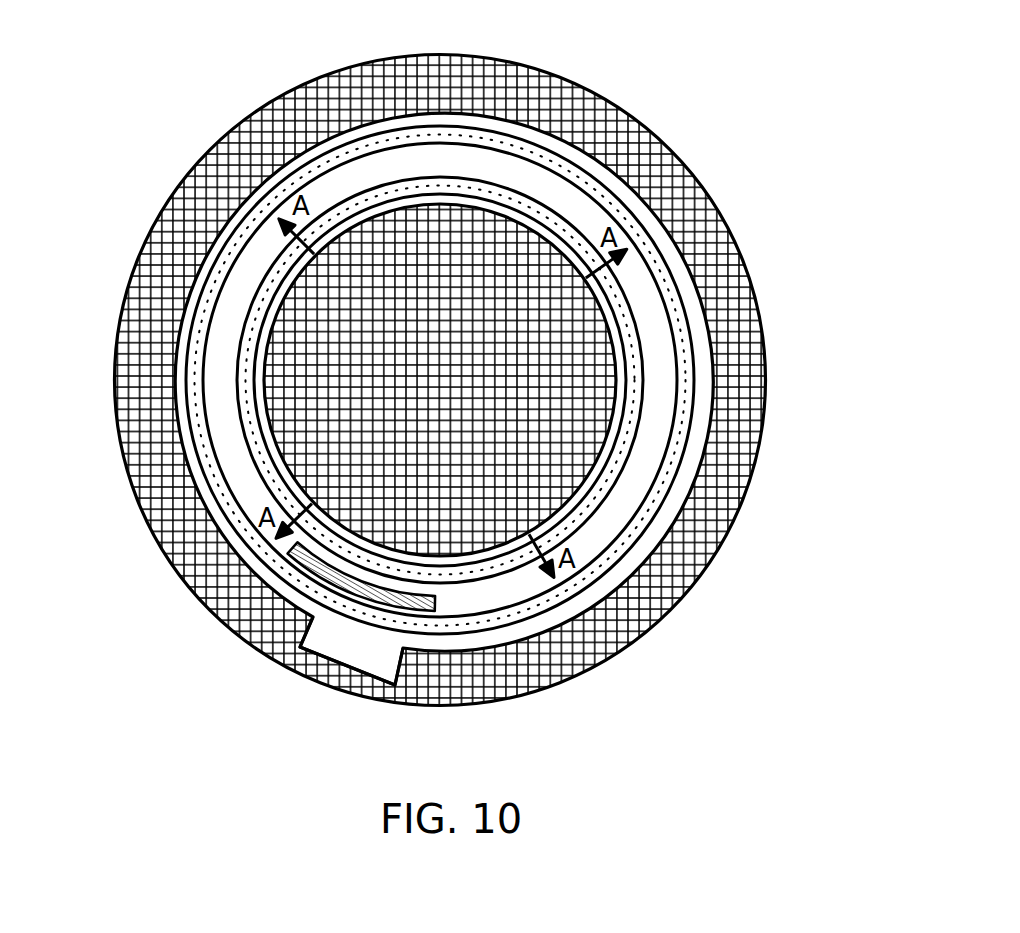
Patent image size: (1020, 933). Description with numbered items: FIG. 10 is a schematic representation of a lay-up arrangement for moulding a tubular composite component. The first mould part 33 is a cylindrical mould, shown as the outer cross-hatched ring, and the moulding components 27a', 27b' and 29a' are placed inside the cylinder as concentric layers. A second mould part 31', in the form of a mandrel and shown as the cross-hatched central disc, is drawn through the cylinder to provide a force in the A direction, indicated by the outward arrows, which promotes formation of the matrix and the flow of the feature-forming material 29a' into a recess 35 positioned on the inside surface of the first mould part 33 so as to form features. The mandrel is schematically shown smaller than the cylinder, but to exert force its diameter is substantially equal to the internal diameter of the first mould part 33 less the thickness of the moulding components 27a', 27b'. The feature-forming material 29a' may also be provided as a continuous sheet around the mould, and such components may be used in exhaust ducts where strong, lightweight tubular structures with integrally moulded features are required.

The first mould part 33 is at (645, 607).
The recess 35 is at (345, 653).
The moulding component 27b' is at (384, 347).
The moulding component 27a' is at (536, 357).
The second mould part 31' is at (471, 278).
The feature-forming material 29a' is at (231, 576).